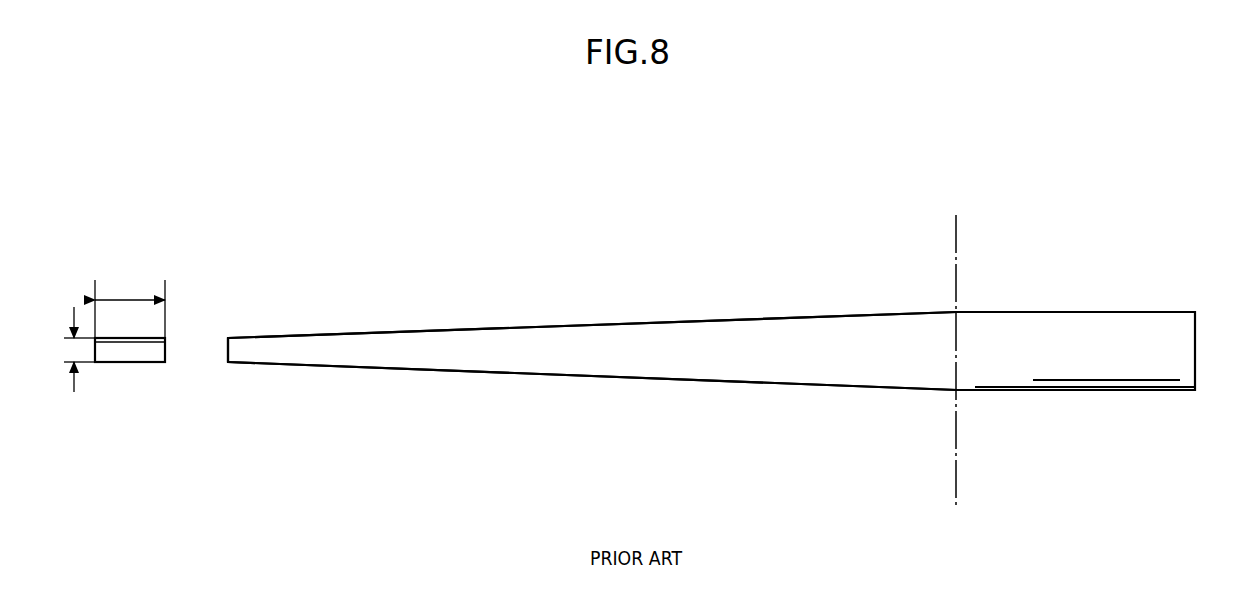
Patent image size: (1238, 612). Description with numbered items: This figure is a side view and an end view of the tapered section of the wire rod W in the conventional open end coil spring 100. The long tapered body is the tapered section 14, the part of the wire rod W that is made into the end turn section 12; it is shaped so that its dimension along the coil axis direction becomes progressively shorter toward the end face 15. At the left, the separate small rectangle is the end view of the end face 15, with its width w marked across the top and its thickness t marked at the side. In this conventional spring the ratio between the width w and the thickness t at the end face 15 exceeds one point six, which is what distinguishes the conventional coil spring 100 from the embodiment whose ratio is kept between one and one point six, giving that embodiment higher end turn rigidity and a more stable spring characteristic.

The conventional open end coil spring 100 is at (843, 392).
The end turn section 12 is at (597, 377).
The tapered section 14 is at (465, 355).
The end face 15 is at (135, 362).
The wire rod W is at (1063, 378).
The width w is at (130, 308).
The thickness t is at (74, 350).